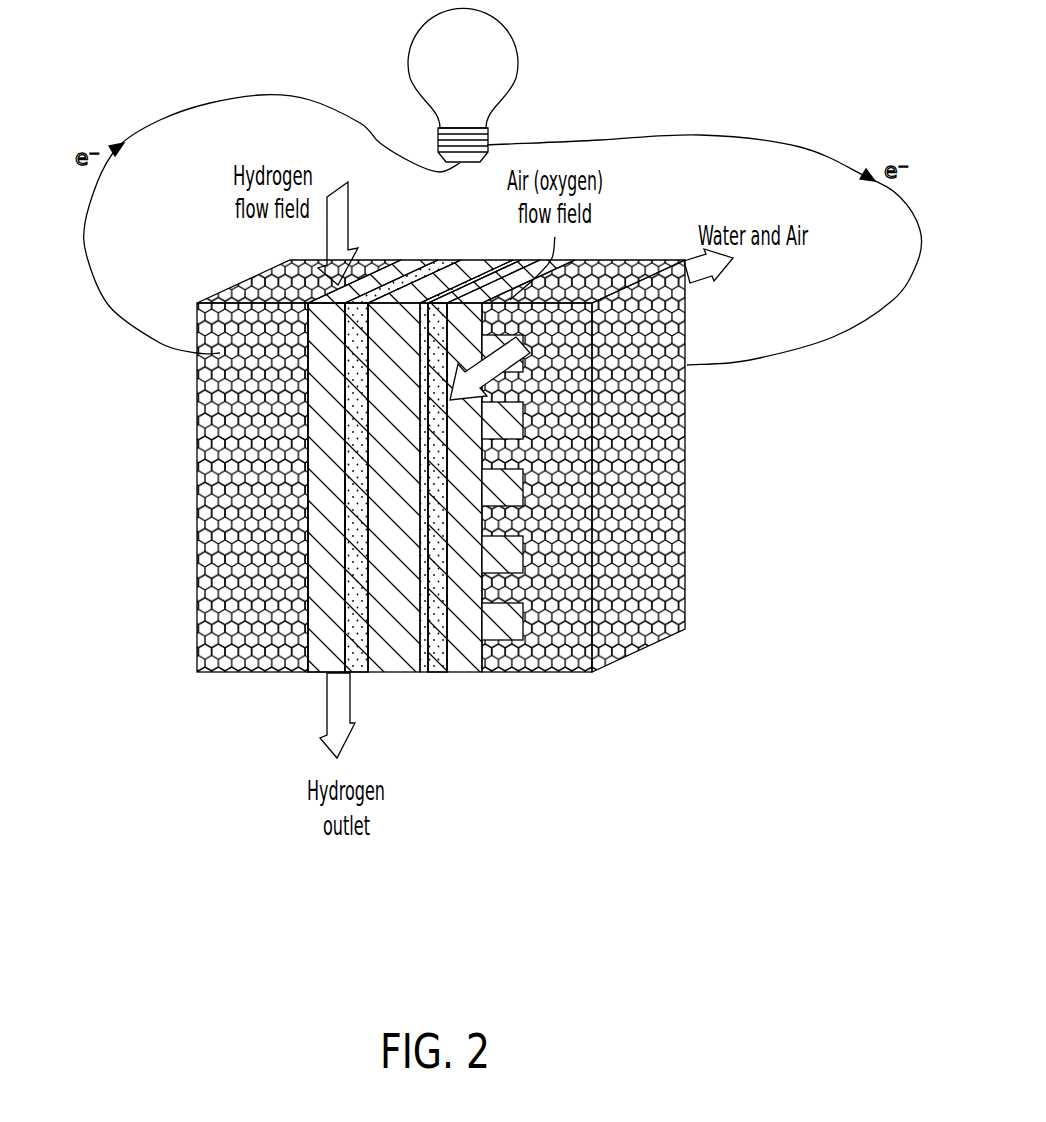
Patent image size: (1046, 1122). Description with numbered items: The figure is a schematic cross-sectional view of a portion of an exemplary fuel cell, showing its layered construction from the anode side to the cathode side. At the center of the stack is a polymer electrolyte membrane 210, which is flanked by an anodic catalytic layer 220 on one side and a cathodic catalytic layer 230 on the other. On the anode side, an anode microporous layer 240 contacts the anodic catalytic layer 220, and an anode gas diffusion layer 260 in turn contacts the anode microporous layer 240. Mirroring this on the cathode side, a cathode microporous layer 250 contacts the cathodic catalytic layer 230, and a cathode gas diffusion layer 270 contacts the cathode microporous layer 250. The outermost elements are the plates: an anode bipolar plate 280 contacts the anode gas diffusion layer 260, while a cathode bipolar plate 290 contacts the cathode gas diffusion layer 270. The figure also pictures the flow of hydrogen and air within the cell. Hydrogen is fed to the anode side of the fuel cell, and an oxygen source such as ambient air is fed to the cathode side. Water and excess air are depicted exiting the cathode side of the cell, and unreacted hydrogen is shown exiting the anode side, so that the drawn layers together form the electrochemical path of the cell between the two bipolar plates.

The polymer electrolyte membrane 210 is at (418, 650).
The anodic catalytic layer 220 is at (350, 650).
The cathodic catalytic layer 230 is at (438, 650).
The anode microporous layer 240 is at (389, 648).
The cathode microporous layer 250 is at (470, 650).
The anode gas diffusion layer 260 is at (337, 603).
The cathode gas diffusion layer 270 is at (520, 648).
The anode bipolar plate 280 is at (197, 443).
The cathode bipolar plate 290 is at (645, 473).